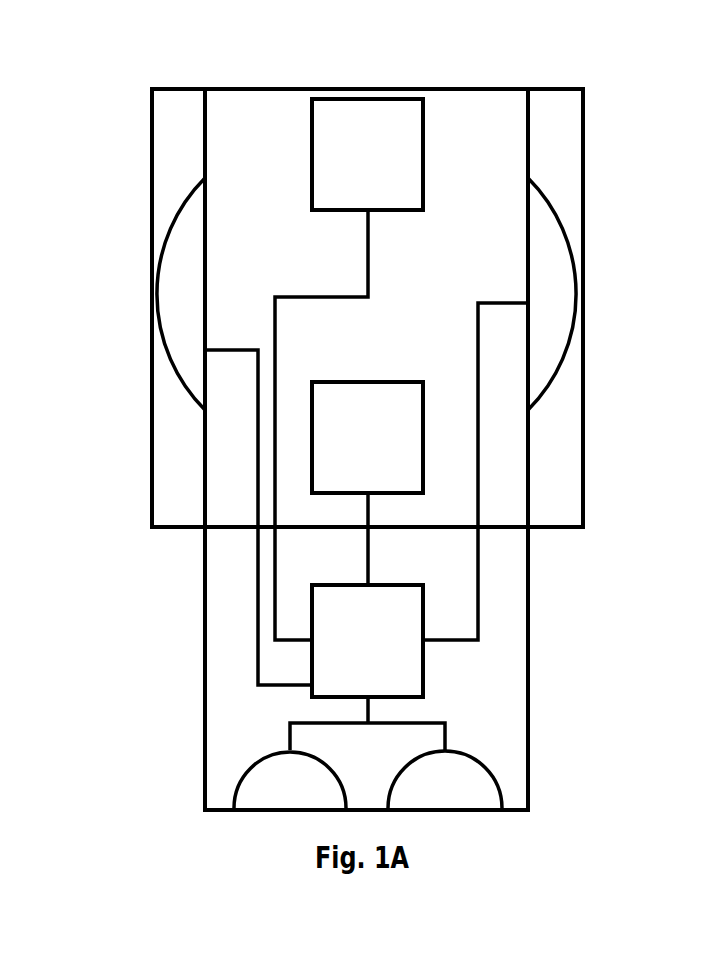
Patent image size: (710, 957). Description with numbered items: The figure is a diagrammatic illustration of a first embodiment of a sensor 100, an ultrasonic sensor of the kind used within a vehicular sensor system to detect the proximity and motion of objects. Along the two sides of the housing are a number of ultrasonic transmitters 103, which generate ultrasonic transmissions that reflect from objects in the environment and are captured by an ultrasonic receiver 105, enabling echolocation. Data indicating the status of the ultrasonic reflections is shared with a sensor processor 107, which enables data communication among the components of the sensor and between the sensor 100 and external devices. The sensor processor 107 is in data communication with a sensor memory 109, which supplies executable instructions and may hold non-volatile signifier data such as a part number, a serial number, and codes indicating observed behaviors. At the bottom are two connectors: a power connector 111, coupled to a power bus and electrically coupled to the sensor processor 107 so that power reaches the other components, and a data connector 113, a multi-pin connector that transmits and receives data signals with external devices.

The sensor 100 is at (118, 113).
The ultrasonic transmitters 103 is at (183, 279).
The ultrasonic receiver 105 is at (349, 168).
The sensor processor 107 is at (349, 655).
The sensor memory 109 is at (349, 450).
The power connector 111 is at (269, 793).
The data connector 113 is at (427, 793).